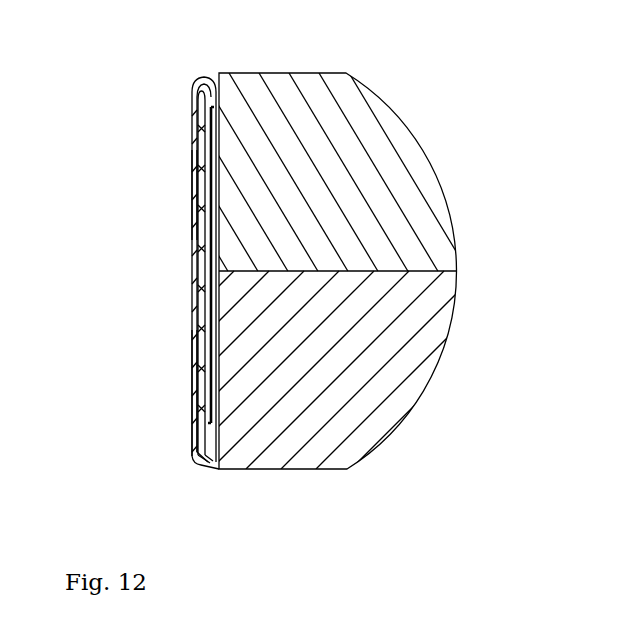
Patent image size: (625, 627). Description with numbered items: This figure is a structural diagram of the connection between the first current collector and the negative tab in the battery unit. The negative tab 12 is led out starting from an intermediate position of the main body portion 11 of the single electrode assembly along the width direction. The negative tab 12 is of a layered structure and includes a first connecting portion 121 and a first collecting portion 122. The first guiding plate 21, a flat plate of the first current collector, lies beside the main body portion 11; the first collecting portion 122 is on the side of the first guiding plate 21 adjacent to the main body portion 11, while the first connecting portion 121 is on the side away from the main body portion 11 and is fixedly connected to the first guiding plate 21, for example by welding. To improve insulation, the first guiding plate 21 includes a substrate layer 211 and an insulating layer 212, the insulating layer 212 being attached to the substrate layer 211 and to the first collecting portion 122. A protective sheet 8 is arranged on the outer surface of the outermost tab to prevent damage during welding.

The main body portion 11 is at (413, 170).
The negative tab 12 is at (214, 84).
The insulating layer 212 is at (209, 121).
The substrate layer 211 is at (193, 193).
The first guiding plate 21 is at (190, 272).
The protective sheet 8 is at (192, 355).
The first connecting portion 121 is at (192, 427).
The first collecting portion 122 is at (219, 434).